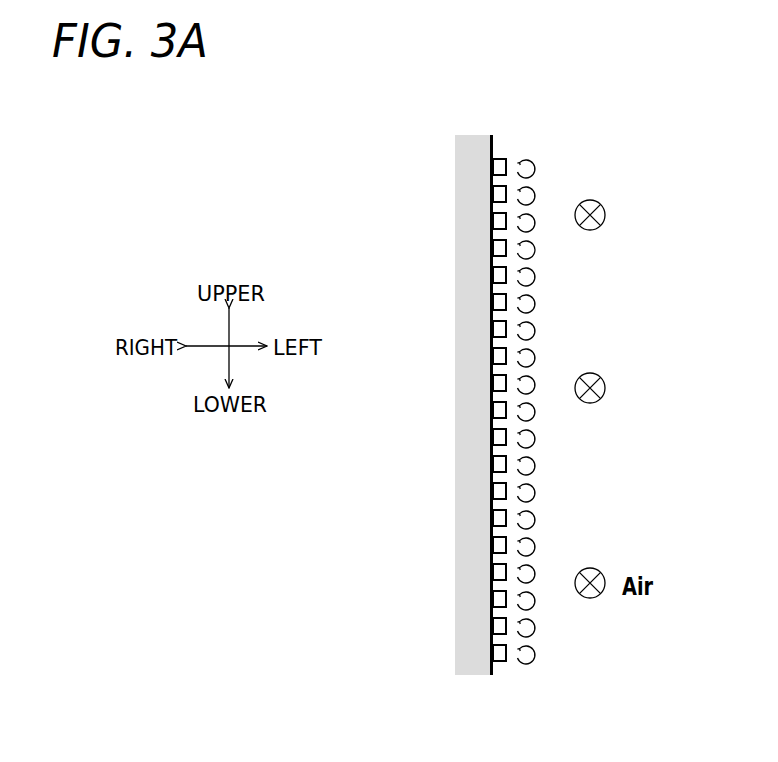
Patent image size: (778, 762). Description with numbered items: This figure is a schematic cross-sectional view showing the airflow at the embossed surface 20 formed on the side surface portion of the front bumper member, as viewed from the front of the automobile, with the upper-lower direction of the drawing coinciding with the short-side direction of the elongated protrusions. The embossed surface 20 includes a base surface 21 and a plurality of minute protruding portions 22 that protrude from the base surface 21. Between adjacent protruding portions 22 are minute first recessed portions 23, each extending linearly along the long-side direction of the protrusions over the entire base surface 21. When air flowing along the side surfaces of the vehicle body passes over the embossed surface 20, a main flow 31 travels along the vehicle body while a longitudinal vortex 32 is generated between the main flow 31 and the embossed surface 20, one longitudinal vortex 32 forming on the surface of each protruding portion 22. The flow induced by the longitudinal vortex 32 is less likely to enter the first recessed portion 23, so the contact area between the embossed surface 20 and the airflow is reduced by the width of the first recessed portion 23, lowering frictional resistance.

The embossed surface 20 is at (452, 405).
The base surface 21 is at (492, 147).
The protruding portion 22 is at (492, 247).
The first recessed portion 23 is at (490, 262).
The main flow 31 is at (605, 393).
The longitudinal vortex 32 is at (535, 468).